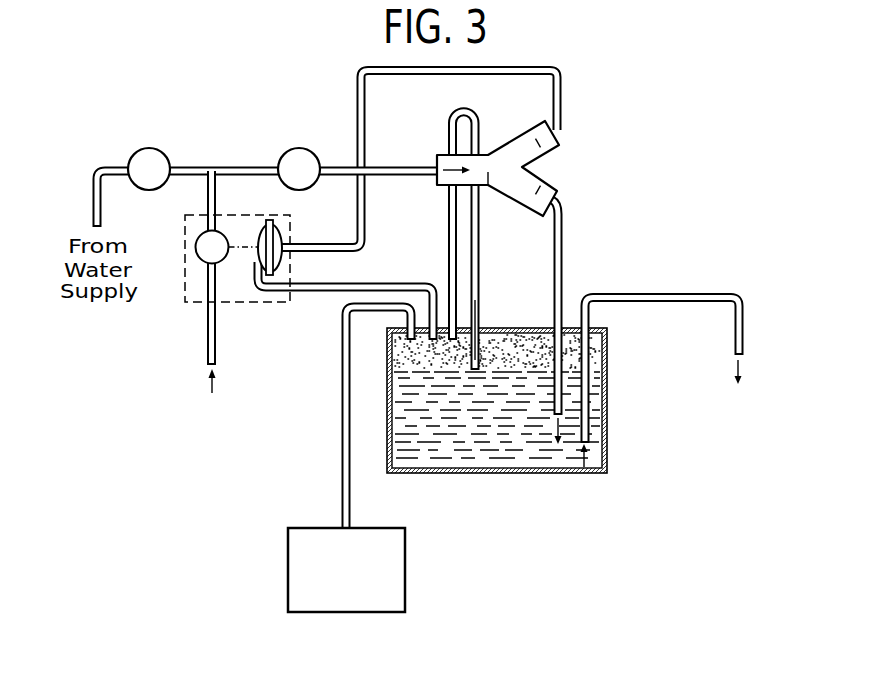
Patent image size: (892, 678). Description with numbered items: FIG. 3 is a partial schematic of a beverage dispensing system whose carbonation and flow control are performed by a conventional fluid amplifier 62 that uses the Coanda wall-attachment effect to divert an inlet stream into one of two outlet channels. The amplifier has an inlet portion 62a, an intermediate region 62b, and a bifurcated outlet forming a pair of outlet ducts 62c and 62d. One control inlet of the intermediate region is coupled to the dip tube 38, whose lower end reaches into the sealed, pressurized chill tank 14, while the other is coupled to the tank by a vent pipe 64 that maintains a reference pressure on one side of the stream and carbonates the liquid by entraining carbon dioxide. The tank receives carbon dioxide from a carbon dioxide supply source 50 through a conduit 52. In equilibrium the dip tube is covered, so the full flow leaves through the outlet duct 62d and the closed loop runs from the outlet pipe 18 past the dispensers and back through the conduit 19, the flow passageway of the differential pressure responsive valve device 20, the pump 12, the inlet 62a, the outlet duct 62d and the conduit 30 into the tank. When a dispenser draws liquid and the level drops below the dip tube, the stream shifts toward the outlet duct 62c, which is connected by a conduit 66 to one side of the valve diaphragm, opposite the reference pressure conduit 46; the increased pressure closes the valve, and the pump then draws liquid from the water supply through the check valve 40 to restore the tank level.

The pump 12 is at (299, 148).
The chill tank 14 is at (607, 362).
The outlet pipe 18 is at (693, 293).
The conduit 19 is at (217, 337).
The differential pressure responsive valve device 20 is at (200, 302).
The conduit 30 is at (561, 247).
The dip tube 38 is at (480, 290).
The check valve 40 is at (149, 148).
The reference pressure conduit 46 is at (386, 283).
The carbon dioxide supply source 50 is at (350, 613).
The conduit 52 is at (342, 405).
The fluid amplifier 62 is at (507, 163).
The inlet portion 62a is at (437, 158).
The intermediate region 62b is at (489, 176).
The outlet duct 62c is at (556, 150).
The outlet duct 62d is at (542, 178).
The vent pipe 64 is at (474, 227).
The conduit 66 is at (513, 66).